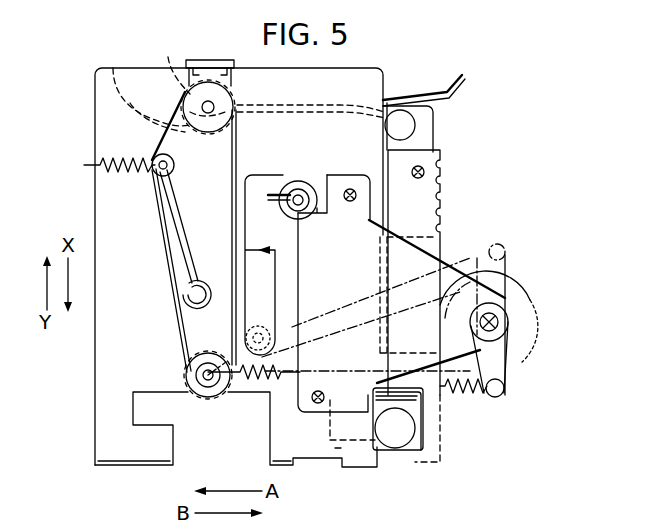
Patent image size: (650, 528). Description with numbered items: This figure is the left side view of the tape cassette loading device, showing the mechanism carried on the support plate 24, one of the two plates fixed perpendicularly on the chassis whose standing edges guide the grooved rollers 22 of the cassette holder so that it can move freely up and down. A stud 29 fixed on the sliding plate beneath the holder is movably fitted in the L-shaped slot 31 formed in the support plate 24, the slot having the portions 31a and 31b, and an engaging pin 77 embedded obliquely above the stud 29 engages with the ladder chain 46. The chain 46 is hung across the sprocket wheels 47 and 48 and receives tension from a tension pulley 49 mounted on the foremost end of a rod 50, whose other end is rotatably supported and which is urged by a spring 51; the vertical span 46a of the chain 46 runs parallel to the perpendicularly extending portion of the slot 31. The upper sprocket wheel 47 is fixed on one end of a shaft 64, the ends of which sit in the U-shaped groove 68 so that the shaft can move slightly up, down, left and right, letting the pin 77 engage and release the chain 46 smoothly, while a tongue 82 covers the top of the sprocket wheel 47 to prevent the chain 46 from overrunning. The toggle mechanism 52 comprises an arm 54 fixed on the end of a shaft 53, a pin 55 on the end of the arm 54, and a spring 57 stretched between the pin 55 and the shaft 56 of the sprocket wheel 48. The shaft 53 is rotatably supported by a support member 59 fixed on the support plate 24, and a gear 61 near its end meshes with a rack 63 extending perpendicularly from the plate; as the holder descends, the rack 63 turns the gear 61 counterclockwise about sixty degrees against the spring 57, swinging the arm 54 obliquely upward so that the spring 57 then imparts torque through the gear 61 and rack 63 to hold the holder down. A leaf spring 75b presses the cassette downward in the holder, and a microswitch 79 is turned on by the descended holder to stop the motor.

The grooved roller 22 is at (414, 127).
The support plate 24 is at (94, 86).
The stud 29 is at (310, 184).
The L-shaped slot 31 is at (270, 250).
The portion of L-shaped slot 31a is at (322, 219).
The portion of L-shaped slot 31b is at (270, 308).
The ladder chain 46 is at (162, 250).
The vertical span 46a is at (233, 198).
The sprocket wheel 47 is at (184, 100).
The sprocket wheel 48 is at (197, 394).
The tension pulley 49 is at (175, 164).
The rod 50 is at (188, 232).
The spring 51 is at (121, 172).
The toggle mechanism 52 is at (511, 251).
The shaft 53 is at (500, 322).
The arm 54 is at (508, 266).
The pin 55 is at (501, 399).
The shaft 56 is at (224, 387).
The spring 57 is at (330, 330).
The support member 59 is at (412, 262).
The gear 61 is at (532, 331).
The rack 63 is at (432, 175).
The shaft 64 is at (229, 108).
The U-shaped groove 68 is at (170, 63).
The leaf spring 75b is at (113, 66).
The engaging pin 77 is at (276, 180).
The microswitch 79 is at (425, 428).
The tongue 82 is at (228, 60).